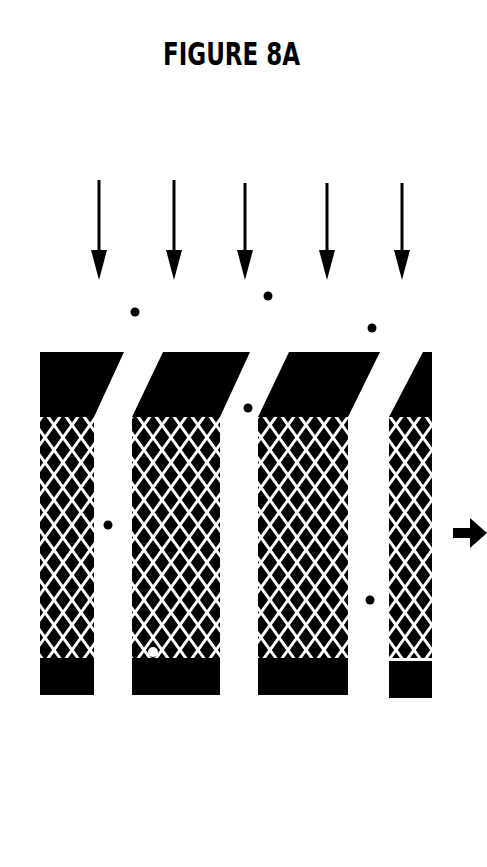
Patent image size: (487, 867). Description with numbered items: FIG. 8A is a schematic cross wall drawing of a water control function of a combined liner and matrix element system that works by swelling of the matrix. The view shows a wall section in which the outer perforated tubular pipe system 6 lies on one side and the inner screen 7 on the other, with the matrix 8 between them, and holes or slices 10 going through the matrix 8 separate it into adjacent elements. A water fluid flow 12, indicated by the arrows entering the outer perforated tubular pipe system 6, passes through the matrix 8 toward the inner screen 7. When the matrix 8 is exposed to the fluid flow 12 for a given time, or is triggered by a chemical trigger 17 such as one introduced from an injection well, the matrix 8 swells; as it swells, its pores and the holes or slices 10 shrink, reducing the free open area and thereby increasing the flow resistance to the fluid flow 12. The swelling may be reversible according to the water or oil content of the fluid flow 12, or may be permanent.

The outer perforated tubular pipe system 6 is at (82, 352).
The inner screen 7 is at (167, 696).
The matrix 8 is at (425, 497).
The holes or slices 10 is at (109, 668).
The fluid flow 12 is at (250, 211).
The chemical trigger 17 is at (376, 327).